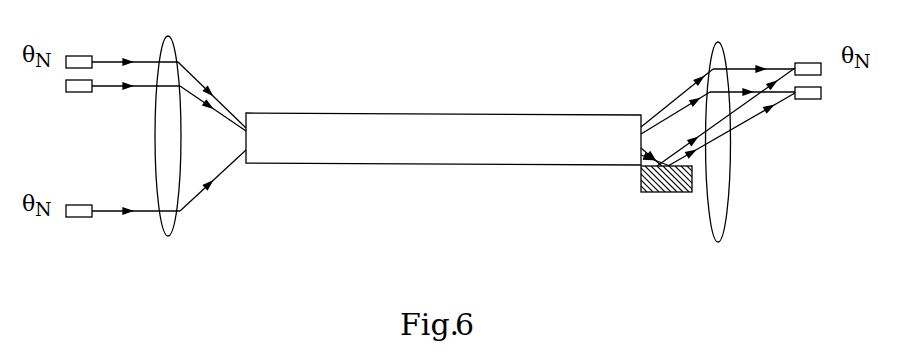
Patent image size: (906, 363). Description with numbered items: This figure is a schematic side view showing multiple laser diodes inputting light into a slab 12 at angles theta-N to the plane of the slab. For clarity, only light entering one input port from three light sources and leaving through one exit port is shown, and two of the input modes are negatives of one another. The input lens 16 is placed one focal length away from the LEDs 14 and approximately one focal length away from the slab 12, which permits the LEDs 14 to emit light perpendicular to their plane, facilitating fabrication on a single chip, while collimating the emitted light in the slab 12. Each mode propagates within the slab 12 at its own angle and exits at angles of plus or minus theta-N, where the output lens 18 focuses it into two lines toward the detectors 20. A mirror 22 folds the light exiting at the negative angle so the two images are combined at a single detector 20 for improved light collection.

The slab 12 is at (443, 129).
The LEDs 14 is at (79, 123).
The input lens 16 is at (168, 148).
The output lens 18 is at (706, 131).
The detectors 20 is at (808, 81).
The mirror 22 is at (664, 194).